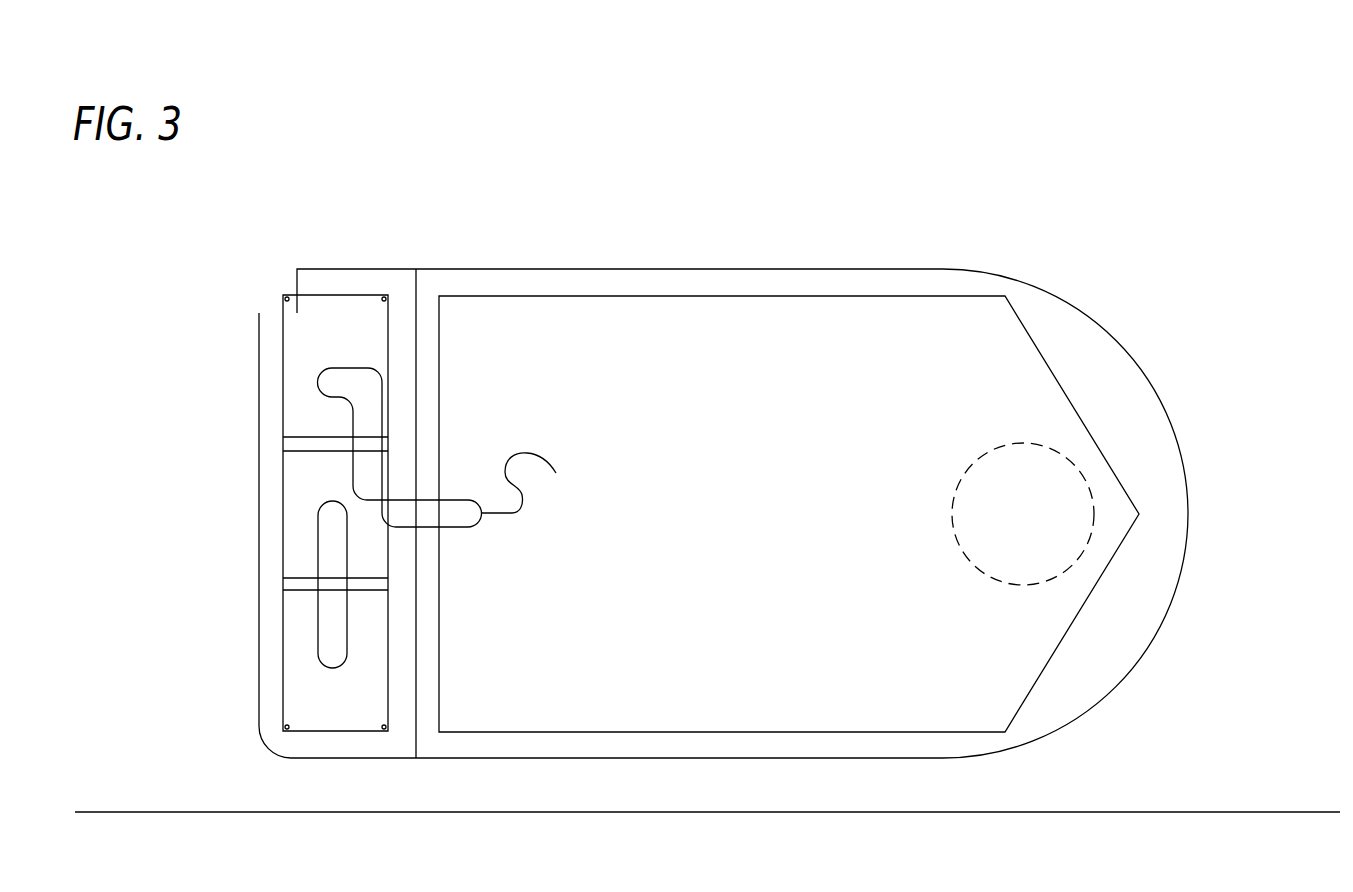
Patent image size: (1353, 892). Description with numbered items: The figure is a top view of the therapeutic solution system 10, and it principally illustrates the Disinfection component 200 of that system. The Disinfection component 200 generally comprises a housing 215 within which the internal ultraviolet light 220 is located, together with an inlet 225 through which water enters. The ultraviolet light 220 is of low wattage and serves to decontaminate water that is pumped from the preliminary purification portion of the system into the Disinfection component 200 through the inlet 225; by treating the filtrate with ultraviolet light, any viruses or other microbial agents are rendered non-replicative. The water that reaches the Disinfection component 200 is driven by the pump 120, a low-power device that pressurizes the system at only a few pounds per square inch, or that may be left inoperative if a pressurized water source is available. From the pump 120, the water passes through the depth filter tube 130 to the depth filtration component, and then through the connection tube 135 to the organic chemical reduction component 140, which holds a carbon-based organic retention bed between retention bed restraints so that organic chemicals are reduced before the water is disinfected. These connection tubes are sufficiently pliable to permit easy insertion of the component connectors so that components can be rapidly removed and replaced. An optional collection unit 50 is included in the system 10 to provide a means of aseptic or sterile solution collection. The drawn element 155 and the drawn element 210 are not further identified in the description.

The therapeutic solution system 10 is at (1227, 518).
The collection unit 50 is at (308, 427).
The pump 120 is at (150, 812).
The depth filter tube 130 is at (308, 670).
The connection tube 135 is at (328, 548).
The organic chemical reduction component 140 is at (308, 487).
The bent tube / channel 155 is at (353, 386).
The Disinfection component 200 is at (1105, 368).
The inner compartment 210 is at (857, 337).
The housing 215 is at (1108, 643).
The internal ultraviolet light 220 is at (1038, 515).
The inlet 225 is at (531, 483).